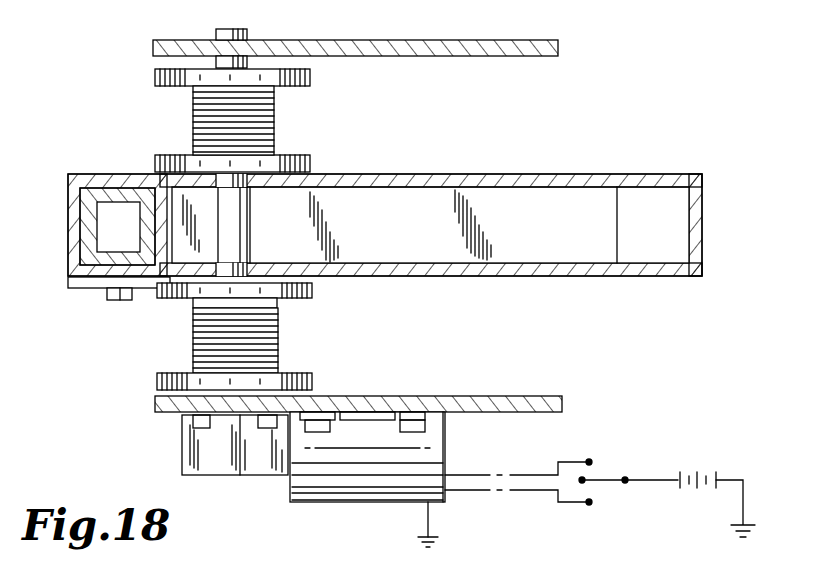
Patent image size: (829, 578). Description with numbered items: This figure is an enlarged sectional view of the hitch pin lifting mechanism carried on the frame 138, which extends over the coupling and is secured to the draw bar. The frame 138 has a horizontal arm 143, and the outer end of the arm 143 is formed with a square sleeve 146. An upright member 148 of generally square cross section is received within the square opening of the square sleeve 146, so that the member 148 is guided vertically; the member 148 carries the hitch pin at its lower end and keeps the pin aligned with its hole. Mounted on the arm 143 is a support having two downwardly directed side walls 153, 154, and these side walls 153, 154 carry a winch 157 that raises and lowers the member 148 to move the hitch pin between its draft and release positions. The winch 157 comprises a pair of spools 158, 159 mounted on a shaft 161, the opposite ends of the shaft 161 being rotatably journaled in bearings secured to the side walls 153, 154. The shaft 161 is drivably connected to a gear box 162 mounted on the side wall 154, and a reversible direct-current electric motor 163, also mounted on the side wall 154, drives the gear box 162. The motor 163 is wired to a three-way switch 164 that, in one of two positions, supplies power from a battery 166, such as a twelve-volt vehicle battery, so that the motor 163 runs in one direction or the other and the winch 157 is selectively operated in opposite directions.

The frame 138 is at (705, 233).
The horizontal arm 143 is at (497, 173).
The square sleeve 146 is at (68, 227).
The upright member 148 is at (108, 238).
The side wall 153 is at (560, 47).
The side wall 154 is at (563, 400).
The winch 157 is at (160, 130).
The spool 158 is at (276, 128).
The spool 159 is at (280, 330).
The shaft 161 is at (250, 30).
The gear box 162 is at (183, 460).
The electric motor 163 is at (362, 503).
The three-way switch 164 is at (577, 510).
The battery 166 is at (690, 498).